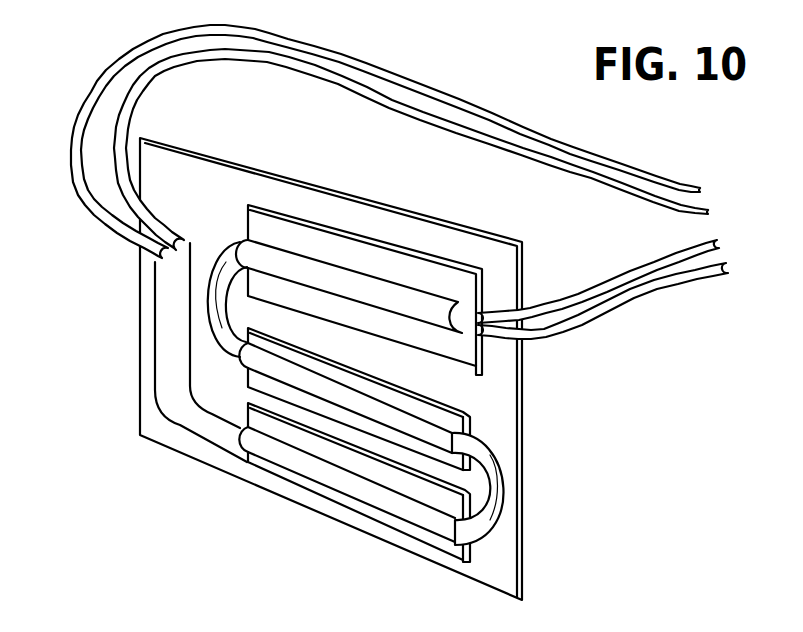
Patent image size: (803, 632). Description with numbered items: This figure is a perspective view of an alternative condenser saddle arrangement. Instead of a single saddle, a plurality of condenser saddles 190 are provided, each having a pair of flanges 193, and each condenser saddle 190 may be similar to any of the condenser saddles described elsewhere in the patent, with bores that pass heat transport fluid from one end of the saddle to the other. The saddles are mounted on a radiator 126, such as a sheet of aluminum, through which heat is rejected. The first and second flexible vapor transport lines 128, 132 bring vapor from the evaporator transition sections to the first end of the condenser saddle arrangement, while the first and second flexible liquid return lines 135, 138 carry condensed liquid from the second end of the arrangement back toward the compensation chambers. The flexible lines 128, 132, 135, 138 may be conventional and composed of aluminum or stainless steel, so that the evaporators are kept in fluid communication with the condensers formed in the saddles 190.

The radiator 126 is at (173, 432).
The first flexible vapor transport line 128 is at (83, 190).
The second flexible vapor transport line 132 is at (195, 63).
The first flexible liquid return line 135 is at (700, 293).
The second flexible liquid return line 138 is at (643, 270).
The condenser saddle 190 is at (288, 231).
The flange 193 is at (424, 270).